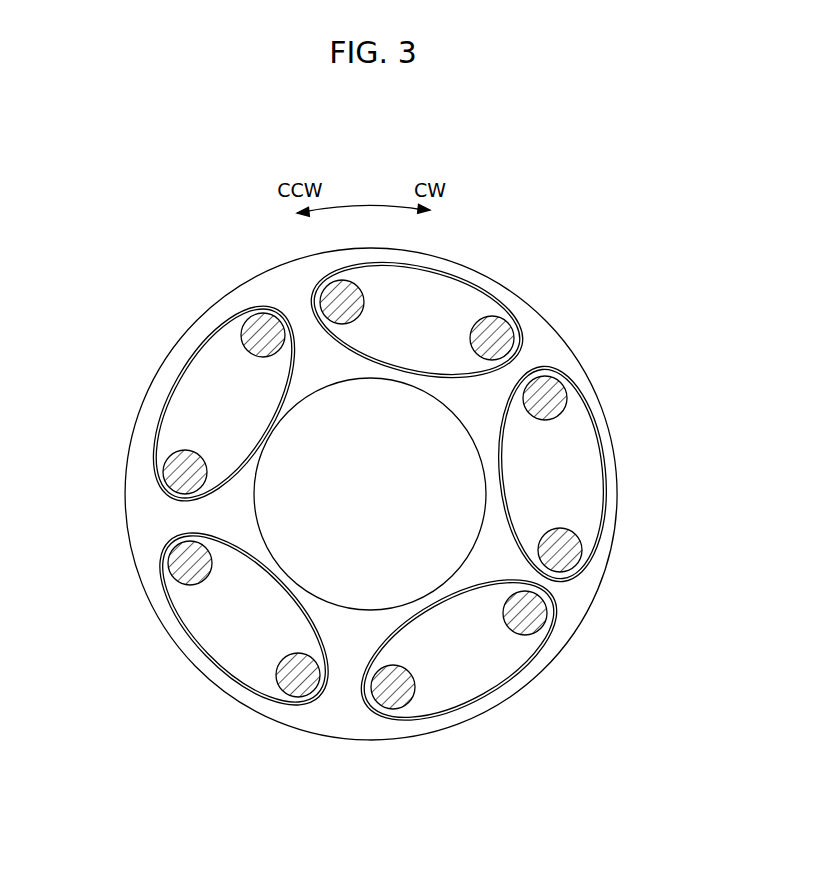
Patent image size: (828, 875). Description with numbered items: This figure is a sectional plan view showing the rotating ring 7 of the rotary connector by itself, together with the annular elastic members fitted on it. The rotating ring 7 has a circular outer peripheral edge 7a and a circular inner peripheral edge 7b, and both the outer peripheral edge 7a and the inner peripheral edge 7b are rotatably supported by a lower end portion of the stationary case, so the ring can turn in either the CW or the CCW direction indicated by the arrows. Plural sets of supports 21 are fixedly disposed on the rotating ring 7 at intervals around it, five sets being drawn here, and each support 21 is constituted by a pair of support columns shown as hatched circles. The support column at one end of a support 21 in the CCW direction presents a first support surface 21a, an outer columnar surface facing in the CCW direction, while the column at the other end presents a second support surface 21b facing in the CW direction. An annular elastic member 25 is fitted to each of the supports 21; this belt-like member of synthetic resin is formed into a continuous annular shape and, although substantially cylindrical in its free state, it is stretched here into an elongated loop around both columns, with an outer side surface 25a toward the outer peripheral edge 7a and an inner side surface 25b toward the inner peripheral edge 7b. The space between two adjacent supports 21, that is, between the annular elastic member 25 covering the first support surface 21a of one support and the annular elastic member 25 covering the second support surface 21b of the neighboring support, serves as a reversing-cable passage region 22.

The rotating ring 7 is at (412, 470).
The outer peripheral edge 7a is at (617, 500).
The inner peripheral edge 7b is at (483, 470).
The support 21 is at (470, 313).
The first support surface 21a is at (313, 287).
The second support surface 21b is at (250, 322).
The reversing-cable passage region 22 is at (303, 312).
The annular elastic member 25 is at (502, 296).
The outer side surface of slot 25a is at (428, 264).
The inner side surface of slot 25b is at (388, 359).